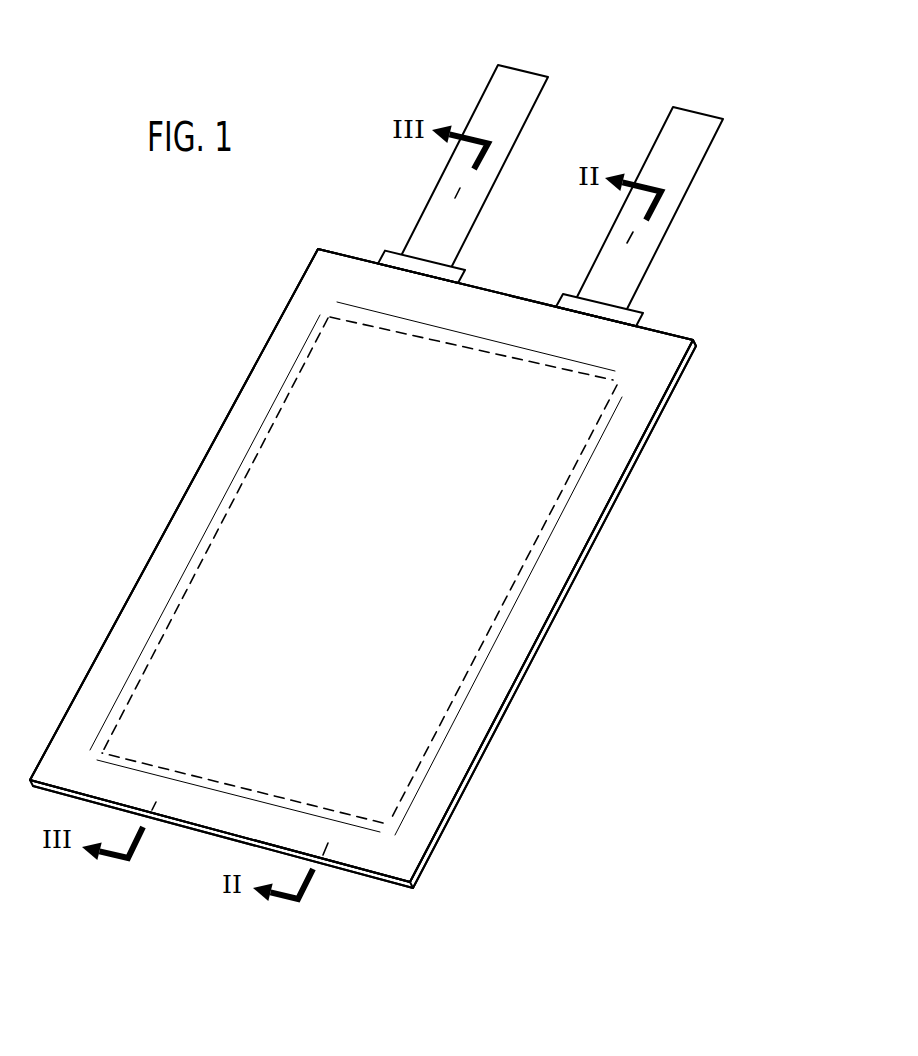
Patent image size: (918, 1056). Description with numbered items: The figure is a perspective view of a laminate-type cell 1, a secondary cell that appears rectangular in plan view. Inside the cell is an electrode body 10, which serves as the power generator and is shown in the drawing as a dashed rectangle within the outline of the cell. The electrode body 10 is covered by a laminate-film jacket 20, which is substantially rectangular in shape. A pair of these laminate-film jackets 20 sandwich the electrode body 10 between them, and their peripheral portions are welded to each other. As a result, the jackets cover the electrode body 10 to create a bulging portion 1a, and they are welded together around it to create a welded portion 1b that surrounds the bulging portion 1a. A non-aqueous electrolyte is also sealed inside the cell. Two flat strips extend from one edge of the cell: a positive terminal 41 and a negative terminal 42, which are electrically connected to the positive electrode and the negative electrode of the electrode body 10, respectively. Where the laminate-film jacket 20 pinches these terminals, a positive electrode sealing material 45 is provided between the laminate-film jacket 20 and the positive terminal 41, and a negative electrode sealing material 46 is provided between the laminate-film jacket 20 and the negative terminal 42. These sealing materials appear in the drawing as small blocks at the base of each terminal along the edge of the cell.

The laminate-type cell 1 is at (735, 70).
The bulging portion 1a is at (405, 700).
The welded portion 1b is at (527, 622).
The electrode body 10 is at (240, 592).
The laminate-film jacket 20 is at (230, 405).
The positive terminal 41 is at (673, 158).
The negative terminal 42 is at (498, 118).
The positive electrode sealing material 45 is at (627, 318).
The negative electrode sealing material 46 is at (390, 258).